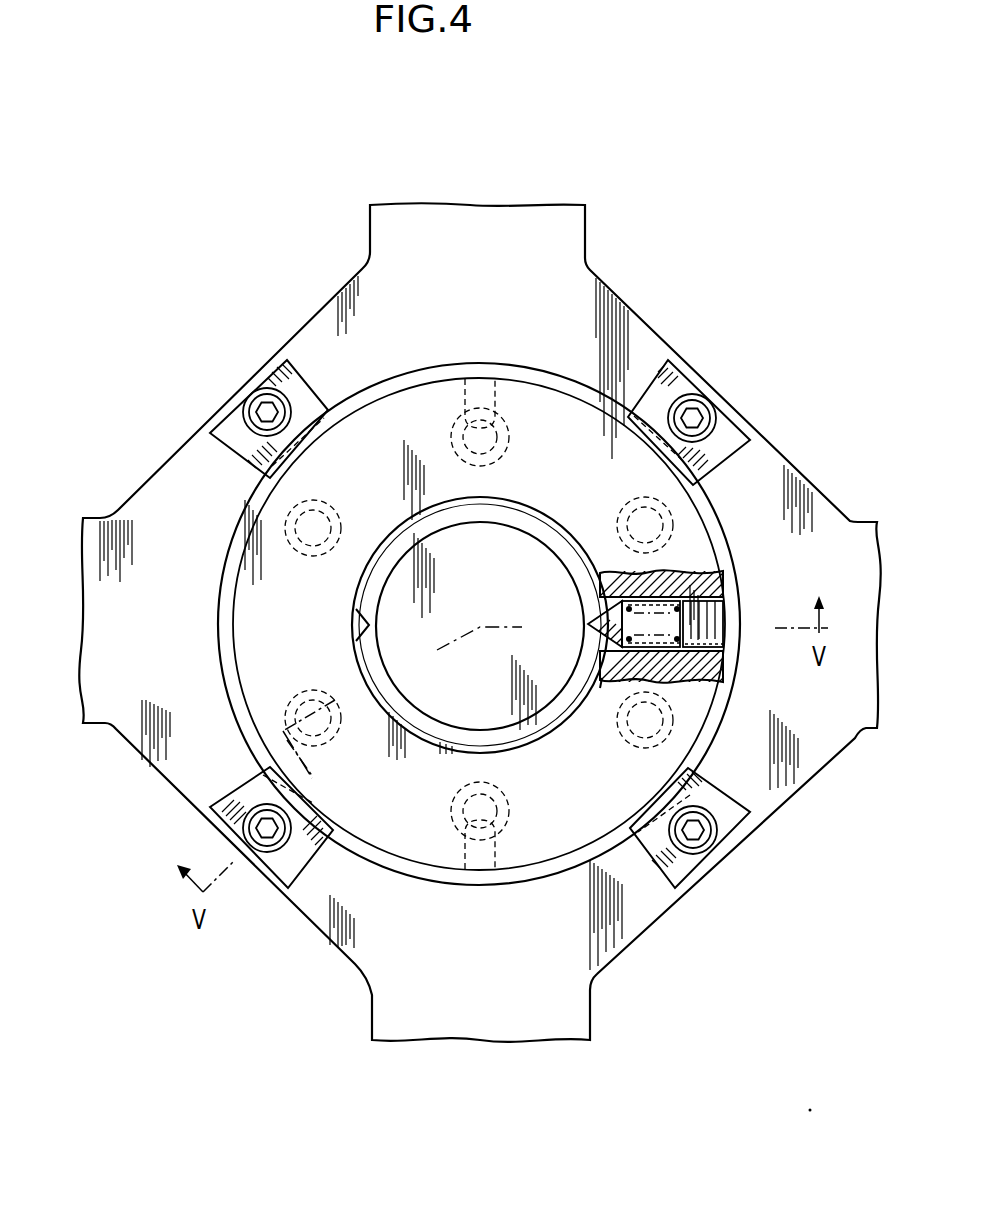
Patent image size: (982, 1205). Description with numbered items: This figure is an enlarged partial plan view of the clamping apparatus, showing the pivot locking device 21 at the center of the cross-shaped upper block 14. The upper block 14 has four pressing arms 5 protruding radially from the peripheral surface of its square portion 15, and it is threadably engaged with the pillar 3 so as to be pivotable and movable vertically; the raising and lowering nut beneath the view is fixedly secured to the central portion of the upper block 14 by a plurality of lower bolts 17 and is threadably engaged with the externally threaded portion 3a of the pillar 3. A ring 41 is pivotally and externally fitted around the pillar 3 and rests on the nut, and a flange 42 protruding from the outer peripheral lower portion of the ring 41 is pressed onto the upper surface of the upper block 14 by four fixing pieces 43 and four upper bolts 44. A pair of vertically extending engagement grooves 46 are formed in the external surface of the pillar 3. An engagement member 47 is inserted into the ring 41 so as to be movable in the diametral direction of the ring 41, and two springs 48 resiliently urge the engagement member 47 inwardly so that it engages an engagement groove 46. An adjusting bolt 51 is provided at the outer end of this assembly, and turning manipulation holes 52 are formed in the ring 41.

The pillar 3 is at (520, 503).
The externally threaded portion 3a is at (533, 530).
The pressing arms 5 is at (578, 229).
The upper block 14 is at (320, 939).
The square portion 15 is at (377, 930).
The bolts 17 is at (505, 427).
The pivot locking device 21 is at (692, 536).
The ring 41 is at (375, 382).
The flange 42 is at (397, 380).
The fixing pieces 43 is at (275, 376).
The upper bolts 44 is at (252, 402).
The engagement grooves 46 is at (352, 627).
The engagement member 47 is at (592, 620).
The springs 48 is at (620, 583).
The adjusting bolt 51 is at (715, 617).
The turning manipulation hole 52 is at (490, 395).